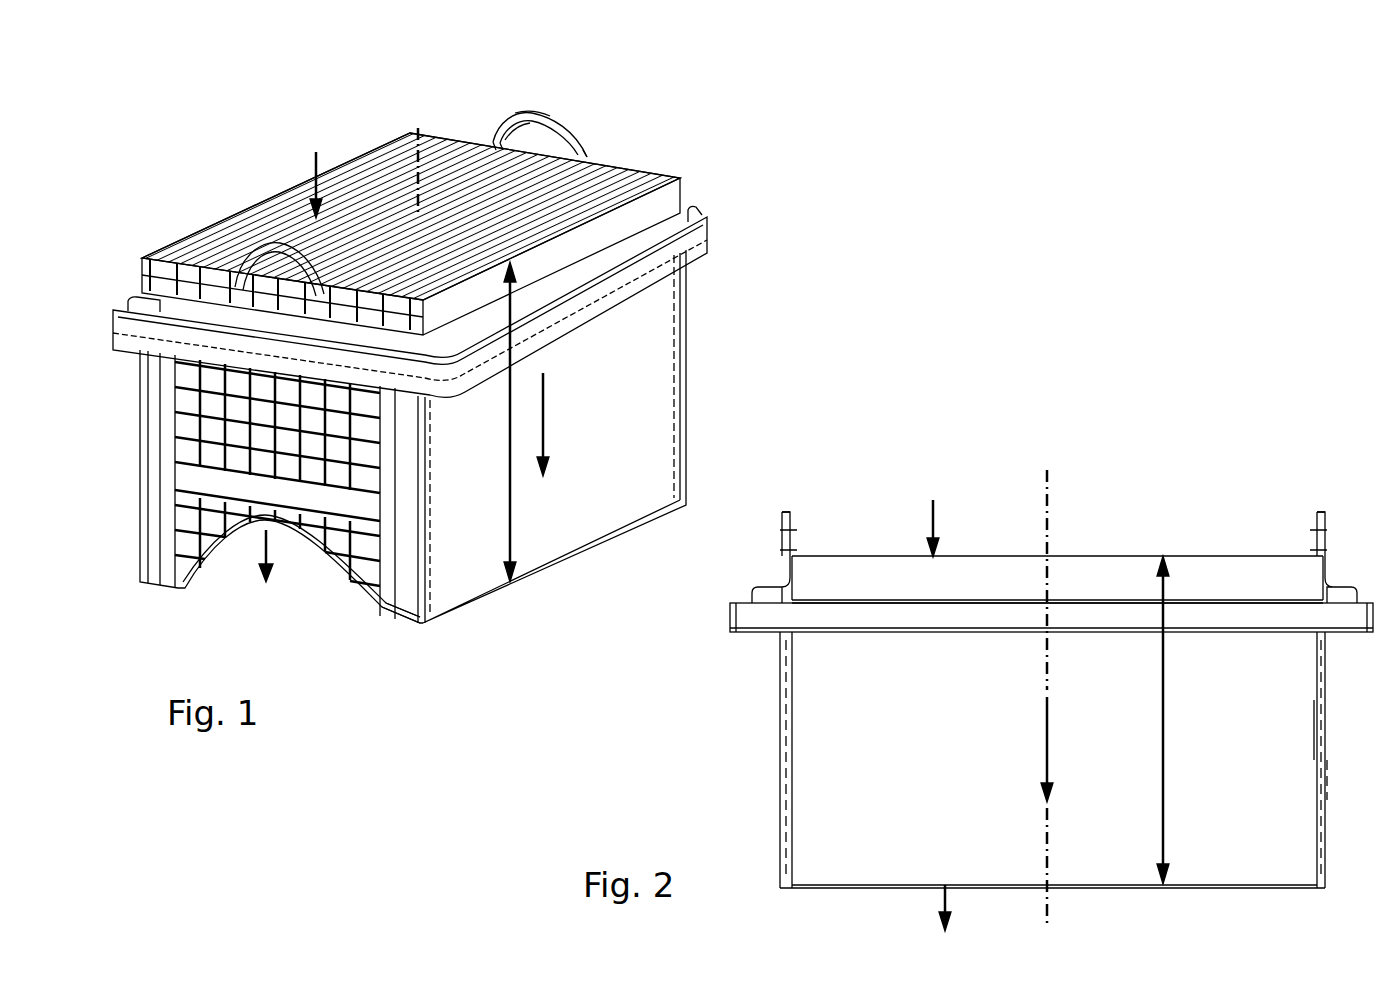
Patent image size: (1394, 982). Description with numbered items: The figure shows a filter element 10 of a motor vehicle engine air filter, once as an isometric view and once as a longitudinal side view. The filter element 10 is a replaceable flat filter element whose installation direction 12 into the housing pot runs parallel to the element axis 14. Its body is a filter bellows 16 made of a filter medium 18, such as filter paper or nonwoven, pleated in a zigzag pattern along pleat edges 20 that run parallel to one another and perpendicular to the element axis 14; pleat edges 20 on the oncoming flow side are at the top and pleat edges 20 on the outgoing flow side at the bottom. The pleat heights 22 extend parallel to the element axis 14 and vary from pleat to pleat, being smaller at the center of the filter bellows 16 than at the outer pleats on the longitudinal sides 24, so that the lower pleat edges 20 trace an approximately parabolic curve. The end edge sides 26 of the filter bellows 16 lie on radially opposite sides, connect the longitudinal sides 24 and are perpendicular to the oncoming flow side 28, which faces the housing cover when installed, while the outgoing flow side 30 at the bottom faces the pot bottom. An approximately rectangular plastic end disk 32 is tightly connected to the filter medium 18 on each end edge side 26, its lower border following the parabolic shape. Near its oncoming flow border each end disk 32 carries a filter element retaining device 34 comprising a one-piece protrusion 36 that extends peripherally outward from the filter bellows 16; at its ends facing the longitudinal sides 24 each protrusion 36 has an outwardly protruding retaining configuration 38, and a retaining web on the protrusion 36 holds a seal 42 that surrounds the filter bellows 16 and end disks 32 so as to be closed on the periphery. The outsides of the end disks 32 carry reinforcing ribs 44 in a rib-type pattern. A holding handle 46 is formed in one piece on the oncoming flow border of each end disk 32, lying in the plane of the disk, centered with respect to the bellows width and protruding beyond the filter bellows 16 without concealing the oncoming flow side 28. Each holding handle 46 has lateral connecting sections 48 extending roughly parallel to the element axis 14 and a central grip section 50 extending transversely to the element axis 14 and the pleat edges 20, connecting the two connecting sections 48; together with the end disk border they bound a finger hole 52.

In FIG. 1, the filter element 10 is at (138, 157).
In FIG. 2, the filter element 10 is at (1207, 450).
In FIG. 1, the installation direction 12 is at (548, 430).
In FIG. 2, the installation direction 12 is at (1049, 706).
In FIG. 1, the element axis 14 is at (412, 133).
In FIG. 2, the element axis 14 is at (1045, 478).
In FIG. 1, the filter bellows 16 is at (652, 366).
In FIG. 2, the filter bellows 16 is at (1302, 842).
In FIG. 1, the filter medium 18 is at (650, 425).
In FIG. 2, the filter medium 18 is at (1292, 778).
In FIG. 1, the pleat edges 20 is at (278, 212).
In FIG. 2, the pleat edges 20 is at (1127, 556).
In FIG. 1, the pleat heights 22 is at (512, 553).
In FIG. 2, the pleat heights 22 is at (1165, 828).
In FIG. 1, the longitudinal sides 24 is at (650, 305).
In FIG. 2, the longitudinal sides 24 is at (1296, 730).
In FIG. 1, the end edge sides 26 is at (160, 262).
In FIG. 2, the end edge sides 26 is at (1306, 762).
In FIG. 1, the oncoming flow side 28 is at (316, 163).
In FIG. 2, the oncoming flow side 28 is at (985, 556).
In FIG. 1, the outgoing flow side 30 is at (300, 545).
In FIG. 2, the outgoing flow side 30 is at (912, 887).
In FIG. 1, the end disk 32 is at (692, 295).
In FIG. 2, the end disk 32 is at (1330, 695).
In FIG. 1, the filter element retaining device 34 is at (131, 295).
In FIG. 2, the filter element retaining device 34 is at (760, 582).
In FIG. 1, the protrusion 36 is at (275, 325).
In FIG. 2, the protrusion 36 is at (768, 600).
In FIG. 1, the retaining configuration 38 is at (150, 318).
In FIG. 2, the retaining configuration 38 is at (758, 600).
In FIG. 1, the seal 42 is at (708, 235).
In FIG. 2, the seal 42 is at (903, 617).
In FIG. 1, the reinforcing ribs 44 is at (366, 560).
In FIG. 2, the reinforcing ribs 44 is at (782, 775).
In FIG. 1, the holding handle 46 is at (246, 241).
In FIG. 2, the holding handle 46 is at (803, 512).
In FIG. 1, the lateral connecting sections 48 is at (500, 133).
In FIG. 2, the lateral connecting sections 48 is at (797, 536).
In FIG. 1, the central grip section 50 is at (552, 118).
In FIG. 2, the central grip section 50 is at (790, 510).
In FIG. 1, the finger hole 52 is at (530, 138).